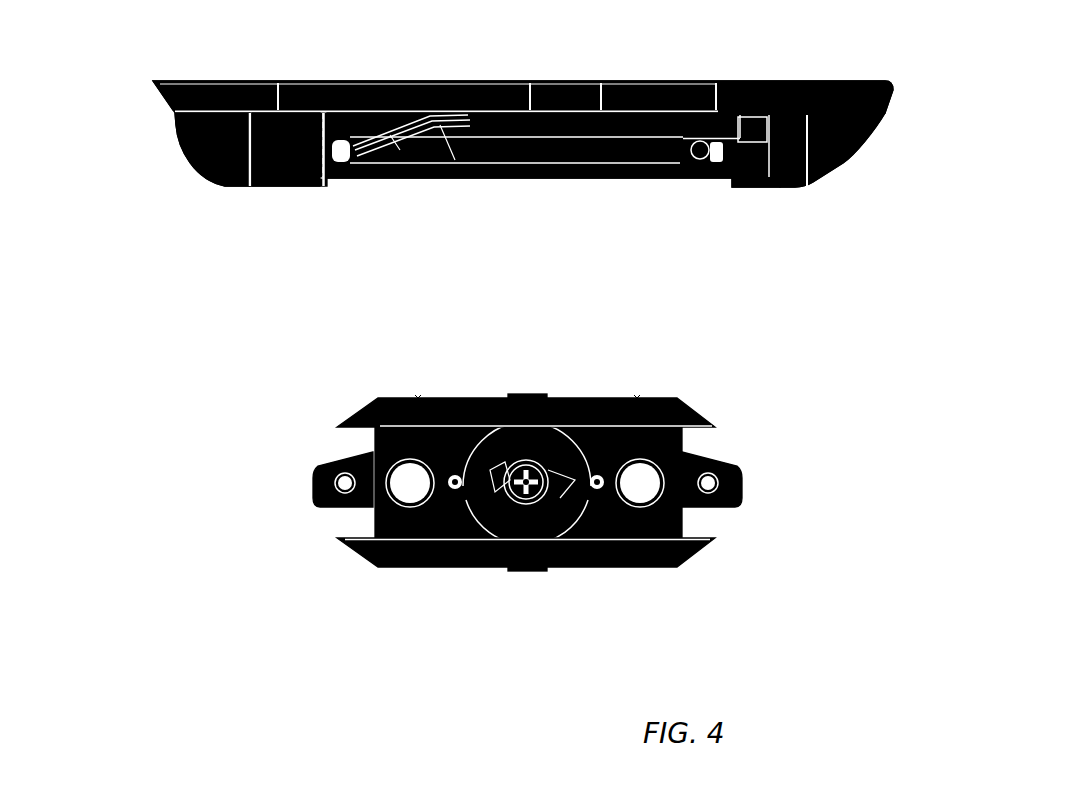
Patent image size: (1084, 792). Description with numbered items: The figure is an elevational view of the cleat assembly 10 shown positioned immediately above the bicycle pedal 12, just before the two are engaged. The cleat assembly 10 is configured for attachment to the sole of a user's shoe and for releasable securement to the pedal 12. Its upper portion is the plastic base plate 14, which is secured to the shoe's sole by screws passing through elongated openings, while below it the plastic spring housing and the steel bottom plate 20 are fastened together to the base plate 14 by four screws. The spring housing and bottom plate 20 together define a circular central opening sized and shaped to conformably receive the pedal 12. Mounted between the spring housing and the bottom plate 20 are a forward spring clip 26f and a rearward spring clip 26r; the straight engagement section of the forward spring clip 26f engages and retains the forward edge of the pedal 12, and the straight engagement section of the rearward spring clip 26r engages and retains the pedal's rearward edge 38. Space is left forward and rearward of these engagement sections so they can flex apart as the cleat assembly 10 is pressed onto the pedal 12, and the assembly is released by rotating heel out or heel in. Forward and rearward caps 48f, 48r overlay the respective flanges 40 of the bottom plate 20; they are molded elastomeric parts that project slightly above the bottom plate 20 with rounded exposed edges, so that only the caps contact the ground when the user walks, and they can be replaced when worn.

The cleat assembly 10 is at (150, 173).
The bicycle pedal 12 is at (278, 583).
The plastic base plate 14 is at (838, 82).
The steel bottom plate 20 is at (343, 172).
The forward spring clip 26f is at (468, 133).
The rearward spring clip 26r is at (700, 152).
The rearward edge 38 is at (338, 423).
The flanges of the bottom plate 40 is at (717, 427).
The forward cap 48f is at (223, 170).
The rearward cap 48r is at (833, 173).